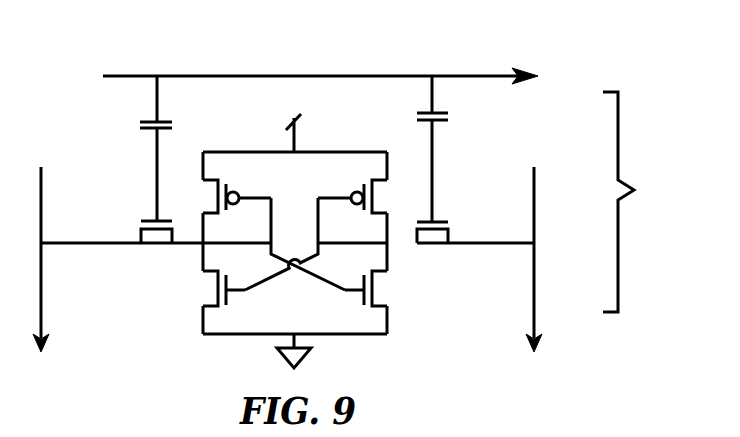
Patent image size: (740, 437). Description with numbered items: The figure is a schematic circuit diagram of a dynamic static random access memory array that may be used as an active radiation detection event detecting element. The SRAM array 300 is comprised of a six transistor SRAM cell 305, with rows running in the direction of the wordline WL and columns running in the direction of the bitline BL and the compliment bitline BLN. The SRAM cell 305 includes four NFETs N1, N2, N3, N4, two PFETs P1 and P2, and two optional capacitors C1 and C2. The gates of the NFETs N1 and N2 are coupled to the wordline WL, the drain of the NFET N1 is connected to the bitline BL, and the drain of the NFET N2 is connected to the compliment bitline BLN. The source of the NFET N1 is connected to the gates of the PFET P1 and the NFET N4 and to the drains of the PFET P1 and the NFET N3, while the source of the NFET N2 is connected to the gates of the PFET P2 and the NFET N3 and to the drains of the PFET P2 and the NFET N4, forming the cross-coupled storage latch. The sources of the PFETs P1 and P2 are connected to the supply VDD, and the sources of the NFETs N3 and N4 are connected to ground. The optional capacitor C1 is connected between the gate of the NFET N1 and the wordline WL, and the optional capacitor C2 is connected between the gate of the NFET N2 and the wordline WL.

The SRAM array 300 is at (598, 61).
The six transistor SRAM cell 305 is at (642, 202).
The wordline WL is at (291, 75).
The bitline BL is at (80, 241).
The compliment bitline BLN is at (506, 241).
The optional capacitor C1 is at (163, 123).
The optional capacitor C2 is at (442, 123).
The NFET N1 is at (156, 217).
The NFET N2 is at (432, 217).
The NFET N3 is at (216, 289).
The NFET N4 is at (373, 289).
The PFET P1 is at (230, 197).
The PFET P2 is at (359, 197).
The element VDD is at (292, 122).